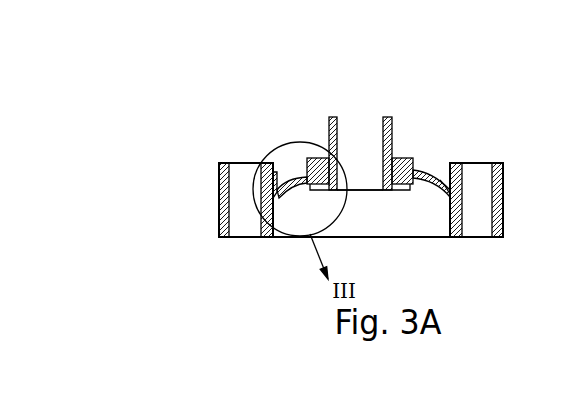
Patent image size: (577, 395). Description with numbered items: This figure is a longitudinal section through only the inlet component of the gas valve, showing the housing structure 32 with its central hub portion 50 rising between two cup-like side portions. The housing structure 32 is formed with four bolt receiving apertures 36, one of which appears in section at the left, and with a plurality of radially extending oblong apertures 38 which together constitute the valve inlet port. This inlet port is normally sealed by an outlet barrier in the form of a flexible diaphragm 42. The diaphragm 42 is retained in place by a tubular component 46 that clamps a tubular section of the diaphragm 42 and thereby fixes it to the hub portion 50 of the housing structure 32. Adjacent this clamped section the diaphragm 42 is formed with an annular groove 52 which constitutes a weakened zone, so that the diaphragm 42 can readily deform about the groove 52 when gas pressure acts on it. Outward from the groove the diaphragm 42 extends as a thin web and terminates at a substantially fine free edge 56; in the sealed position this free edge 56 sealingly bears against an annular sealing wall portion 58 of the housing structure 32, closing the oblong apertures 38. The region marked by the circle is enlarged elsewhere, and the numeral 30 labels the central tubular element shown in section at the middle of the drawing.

The tubular port 30 is at (353, 132).
The housing structure 32 is at (503, 193).
The bolt receiving apertures 36 is at (243, 208).
The radially extending oblong apertures 38 is at (430, 175).
The diaphragm 42 is at (433, 183).
The tubular component 46 is at (330, 145).
The hub portion 50 is at (403, 158).
The annular groove 52 is at (296, 178).
The free edge 56 is at (278, 200).
The annular sealing wall portion 58 is at (258, 167).